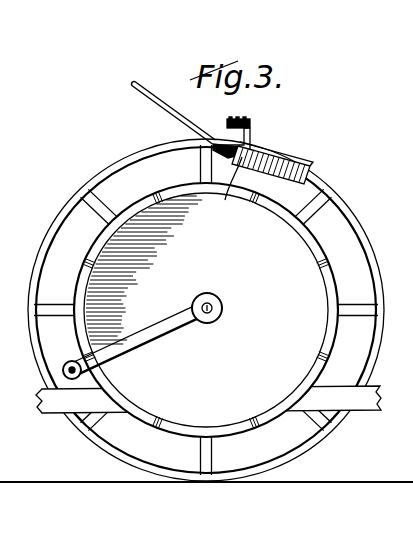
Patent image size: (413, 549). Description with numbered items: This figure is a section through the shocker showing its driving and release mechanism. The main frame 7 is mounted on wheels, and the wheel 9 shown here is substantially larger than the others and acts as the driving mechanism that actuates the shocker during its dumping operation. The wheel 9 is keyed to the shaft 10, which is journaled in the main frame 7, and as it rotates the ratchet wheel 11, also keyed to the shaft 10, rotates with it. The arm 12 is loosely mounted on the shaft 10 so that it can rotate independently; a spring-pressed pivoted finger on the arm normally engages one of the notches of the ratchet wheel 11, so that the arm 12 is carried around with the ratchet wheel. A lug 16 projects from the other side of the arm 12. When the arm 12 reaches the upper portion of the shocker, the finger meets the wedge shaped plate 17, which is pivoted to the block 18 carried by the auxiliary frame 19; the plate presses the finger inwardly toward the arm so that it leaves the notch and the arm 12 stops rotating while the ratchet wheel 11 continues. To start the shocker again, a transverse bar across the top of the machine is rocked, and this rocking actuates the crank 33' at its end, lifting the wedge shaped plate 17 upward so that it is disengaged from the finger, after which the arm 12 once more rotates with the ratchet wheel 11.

The main frame 7 is at (335, 390).
The wheel 9 is at (374, 248).
The shaft 10 is at (222, 304).
The ratchet wheel 11 is at (306, 238).
The arm 12 is at (171, 306).
The lug 16 is at (110, 368).
The wedge shaped plate 17 is at (228, 188).
The block 18 is at (291, 178).
The auxiliary frame 19 is at (244, 120).
The crank 33' is at (184, 119).